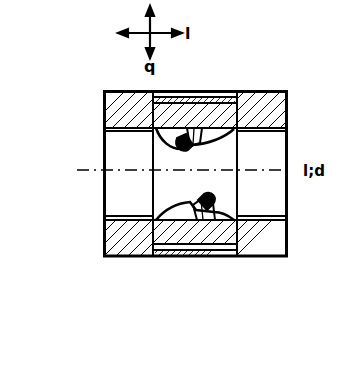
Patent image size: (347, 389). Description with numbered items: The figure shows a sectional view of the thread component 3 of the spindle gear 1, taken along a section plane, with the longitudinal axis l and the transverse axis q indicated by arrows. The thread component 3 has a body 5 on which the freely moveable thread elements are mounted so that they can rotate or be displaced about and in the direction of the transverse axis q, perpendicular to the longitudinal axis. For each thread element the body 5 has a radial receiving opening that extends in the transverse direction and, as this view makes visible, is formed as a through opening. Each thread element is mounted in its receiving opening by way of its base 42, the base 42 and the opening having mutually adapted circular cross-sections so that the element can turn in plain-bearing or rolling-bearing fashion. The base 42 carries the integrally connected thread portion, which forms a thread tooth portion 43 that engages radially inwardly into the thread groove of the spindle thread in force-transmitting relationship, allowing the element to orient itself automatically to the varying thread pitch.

The spindle gear 1 is at (173, 179).
The thread component 3 is at (108, 72).
The body 5 is at (100, 91).
The base 42 is at (206, 134).
The thread tooth portion 43 is at (197, 125).